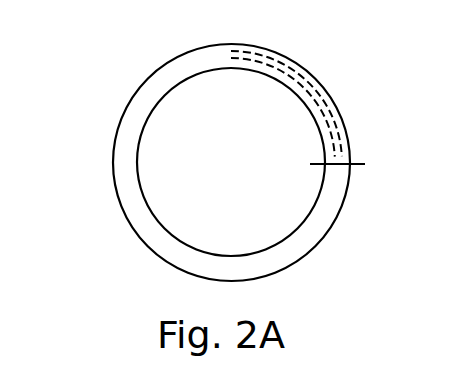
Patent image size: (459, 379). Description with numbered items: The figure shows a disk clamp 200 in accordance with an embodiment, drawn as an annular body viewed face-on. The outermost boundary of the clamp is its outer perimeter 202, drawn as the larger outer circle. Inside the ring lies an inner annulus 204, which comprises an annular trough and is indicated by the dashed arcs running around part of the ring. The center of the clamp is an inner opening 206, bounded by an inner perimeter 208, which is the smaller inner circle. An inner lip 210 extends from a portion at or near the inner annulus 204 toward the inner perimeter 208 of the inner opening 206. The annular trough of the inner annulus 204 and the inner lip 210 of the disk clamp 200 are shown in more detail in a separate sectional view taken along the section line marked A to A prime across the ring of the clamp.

The disk clamp 200 is at (222, 149).
The outer perimeter 202 is at (127, 112).
The inner annulus 204 is at (339, 121).
The inner opening 206 is at (231, 162).
The inner perimeter 208 is at (140, 128).
The inner lip 210 is at (300, 228).